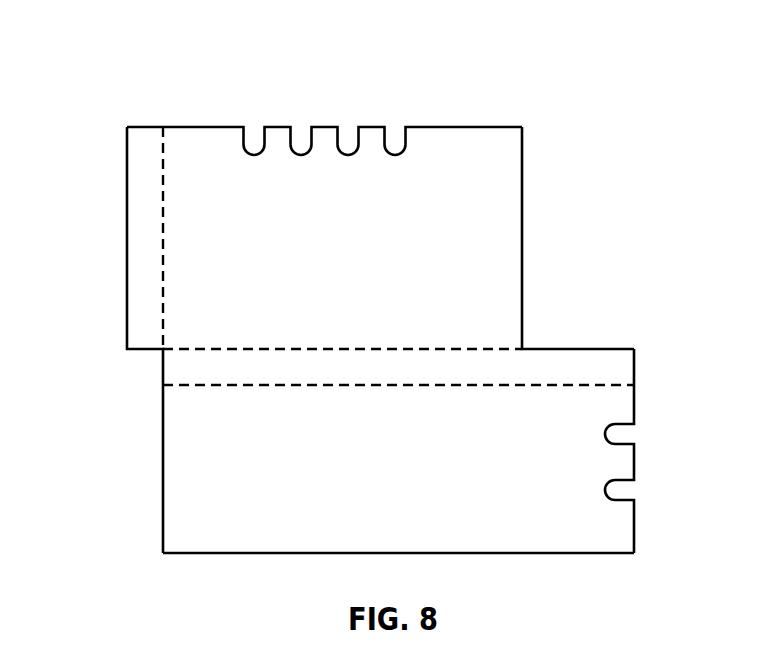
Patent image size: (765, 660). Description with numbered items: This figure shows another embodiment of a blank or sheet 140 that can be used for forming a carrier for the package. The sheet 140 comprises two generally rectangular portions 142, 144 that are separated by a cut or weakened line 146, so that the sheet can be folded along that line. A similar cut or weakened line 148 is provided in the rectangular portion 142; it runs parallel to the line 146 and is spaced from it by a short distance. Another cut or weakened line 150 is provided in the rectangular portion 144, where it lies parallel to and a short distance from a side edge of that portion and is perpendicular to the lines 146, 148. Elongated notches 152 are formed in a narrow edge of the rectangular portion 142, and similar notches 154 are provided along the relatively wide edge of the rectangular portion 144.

The blank 140 is at (130, 431).
The rectangular portion 142 is at (274, 543).
The rectangular portion 144 is at (502, 282).
The cut or weakened line 146 is at (287, 348).
The cut or weakened line 148 is at (362, 386).
The cut or weakened line 150 is at (166, 277).
The elongated notches 152 is at (622, 441).
The notches 154 is at (296, 131).